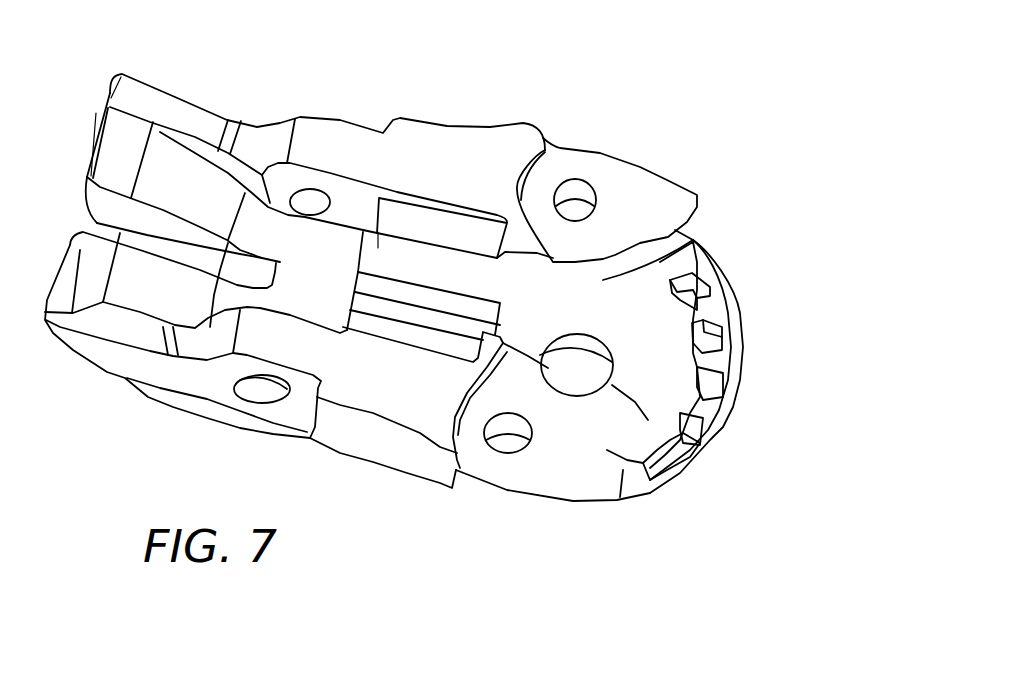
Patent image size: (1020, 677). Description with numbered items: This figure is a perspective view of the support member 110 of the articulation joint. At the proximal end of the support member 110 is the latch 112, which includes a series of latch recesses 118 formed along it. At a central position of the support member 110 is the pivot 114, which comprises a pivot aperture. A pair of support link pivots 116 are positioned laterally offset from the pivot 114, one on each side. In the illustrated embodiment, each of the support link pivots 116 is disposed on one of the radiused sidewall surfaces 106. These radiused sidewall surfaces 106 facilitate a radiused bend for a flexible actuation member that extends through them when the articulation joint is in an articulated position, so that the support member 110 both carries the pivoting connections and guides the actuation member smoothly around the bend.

The radiused sidewall surfaces 106 is at (603, 277).
The support member 110 is at (430, 147).
The latch 112 is at (745, 400).
The pivot 114 is at (593, 380).
The support link pivots 116 is at (577, 190).
The latch recesses 118 is at (710, 387).